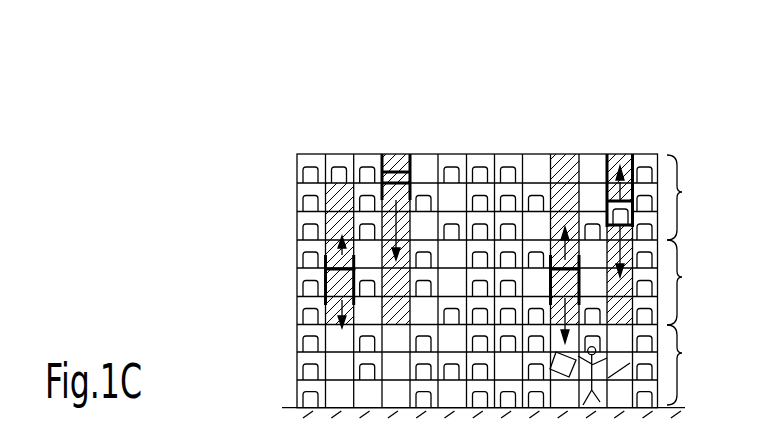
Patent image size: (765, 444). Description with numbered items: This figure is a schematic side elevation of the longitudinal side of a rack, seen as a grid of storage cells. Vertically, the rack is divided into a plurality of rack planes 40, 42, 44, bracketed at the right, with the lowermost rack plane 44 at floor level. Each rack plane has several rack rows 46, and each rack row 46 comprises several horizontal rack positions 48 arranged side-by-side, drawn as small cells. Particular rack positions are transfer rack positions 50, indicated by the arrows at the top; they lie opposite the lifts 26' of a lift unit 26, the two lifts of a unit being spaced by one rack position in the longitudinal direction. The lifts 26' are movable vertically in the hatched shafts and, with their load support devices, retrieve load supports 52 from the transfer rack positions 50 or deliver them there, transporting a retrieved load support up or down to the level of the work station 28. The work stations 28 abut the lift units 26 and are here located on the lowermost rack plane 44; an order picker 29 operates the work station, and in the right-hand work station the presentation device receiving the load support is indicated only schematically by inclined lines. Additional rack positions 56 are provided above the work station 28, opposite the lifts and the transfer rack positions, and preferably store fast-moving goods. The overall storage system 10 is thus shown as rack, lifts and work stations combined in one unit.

The storage system 10 is at (529, 299).
The rack row 46 is at (278, 163).
The rack position 48 is at (483, 171).
The load support 52 is at (452, 172).
The transfer rack position 50 is at (342, 128).
The lift 26' is at (414, 175).
The rack plane 40 is at (688, 197).
The rack plane 42 is at (688, 282).
The lowermost rack plane 44 is at (688, 365).
The work station 28 is at (471, 426).
The lift unit 26 is at (492, 427).
The order picker 29 is at (588, 400).
The additional rack position 56 is at (620, 443).